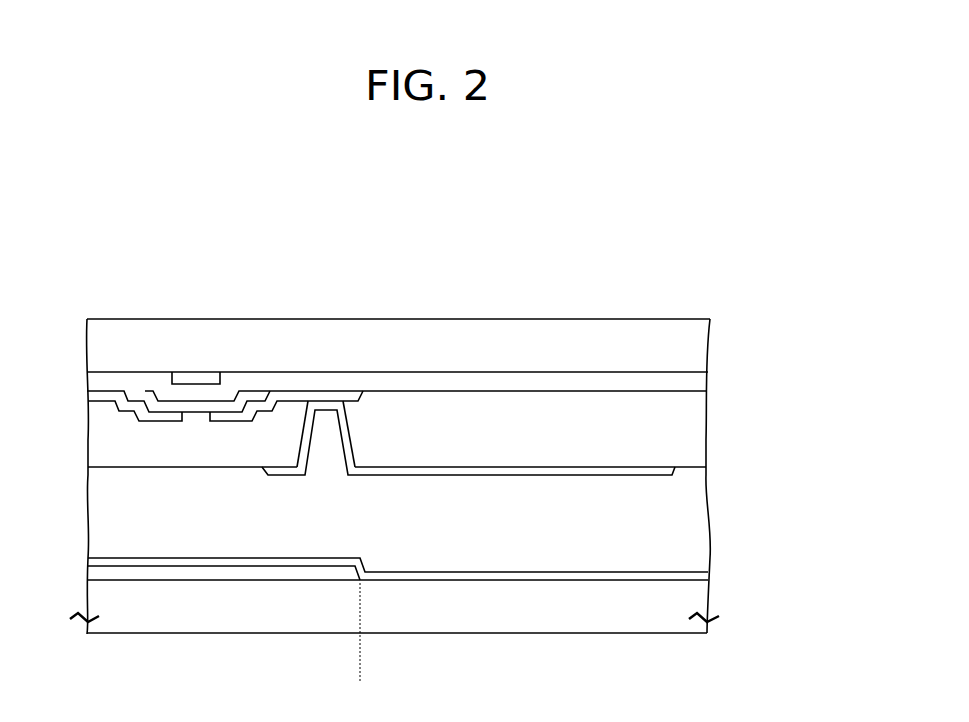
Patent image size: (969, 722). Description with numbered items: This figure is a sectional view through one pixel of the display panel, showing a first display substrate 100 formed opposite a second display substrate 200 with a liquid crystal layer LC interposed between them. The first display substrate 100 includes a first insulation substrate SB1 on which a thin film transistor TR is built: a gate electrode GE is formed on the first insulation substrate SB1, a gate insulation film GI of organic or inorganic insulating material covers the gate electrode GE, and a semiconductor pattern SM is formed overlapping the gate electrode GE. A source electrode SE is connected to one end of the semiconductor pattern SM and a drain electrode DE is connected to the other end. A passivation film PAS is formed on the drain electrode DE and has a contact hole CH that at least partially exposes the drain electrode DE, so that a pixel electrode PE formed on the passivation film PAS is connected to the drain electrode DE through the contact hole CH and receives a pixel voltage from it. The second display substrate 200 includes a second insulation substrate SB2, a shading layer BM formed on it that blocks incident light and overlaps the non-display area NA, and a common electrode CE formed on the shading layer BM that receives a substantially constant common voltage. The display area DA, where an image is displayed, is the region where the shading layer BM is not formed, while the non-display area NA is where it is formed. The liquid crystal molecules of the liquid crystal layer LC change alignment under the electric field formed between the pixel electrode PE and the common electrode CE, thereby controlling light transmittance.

The first insulation substrate SB1 is at (693, 343).
The gate insulation film GI is at (693, 383).
The gate electrode GE is at (195, 380).
The semiconductor pattern SM is at (147, 396).
The source electrode SE is at (110, 397).
The drain electrode DE is at (283, 396).
The thin film transistor TR is at (225, 327).
The passivation film PAS is at (693, 430).
The contact hole CH is at (354, 435).
The pixel electrode PE is at (673, 470).
The liquid crystal layer LC is at (697, 522).
The common electrode CE is at (92, 560).
The shading layer BM is at (92, 574).
The second insulation substrate SB2 is at (695, 600).
The first display substrate 100 is at (774, 337).
The second display substrate 200 is at (774, 565).
The non-display area NA is at (360, 676).
The display area DA is at (696, 676).